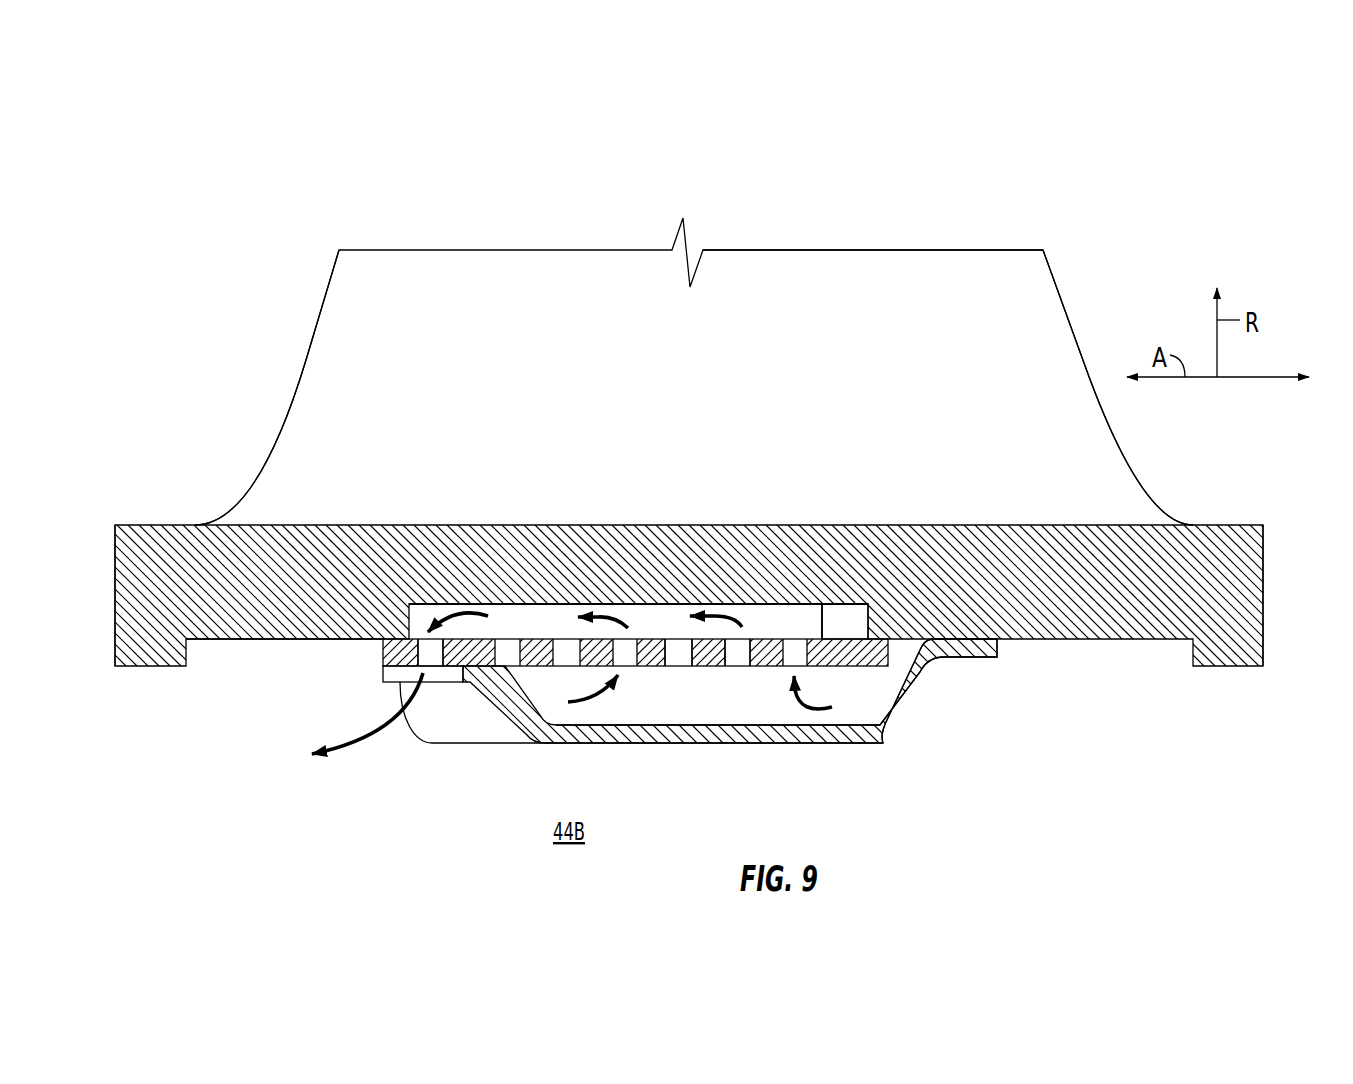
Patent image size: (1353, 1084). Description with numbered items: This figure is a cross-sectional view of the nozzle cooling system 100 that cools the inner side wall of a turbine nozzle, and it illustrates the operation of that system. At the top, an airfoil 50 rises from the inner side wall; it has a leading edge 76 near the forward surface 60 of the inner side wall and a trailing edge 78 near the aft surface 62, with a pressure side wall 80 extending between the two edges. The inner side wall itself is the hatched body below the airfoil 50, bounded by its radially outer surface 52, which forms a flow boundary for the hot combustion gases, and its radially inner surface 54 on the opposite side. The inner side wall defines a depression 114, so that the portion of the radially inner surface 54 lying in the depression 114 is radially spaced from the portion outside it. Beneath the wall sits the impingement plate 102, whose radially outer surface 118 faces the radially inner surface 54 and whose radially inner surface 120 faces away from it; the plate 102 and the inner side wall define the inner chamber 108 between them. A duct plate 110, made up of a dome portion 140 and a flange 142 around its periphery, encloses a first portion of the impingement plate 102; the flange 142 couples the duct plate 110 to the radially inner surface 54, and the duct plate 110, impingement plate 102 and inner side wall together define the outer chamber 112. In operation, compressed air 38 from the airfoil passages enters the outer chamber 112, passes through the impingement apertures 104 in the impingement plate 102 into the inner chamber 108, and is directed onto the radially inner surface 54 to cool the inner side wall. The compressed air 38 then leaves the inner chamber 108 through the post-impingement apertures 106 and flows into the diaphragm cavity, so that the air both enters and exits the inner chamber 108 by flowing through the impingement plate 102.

The nozzle cooling system 100 is at (266, 203).
The airfoil 50 is at (515, 217).
The pressure side wall 80 is at (787, 297).
The leading edge 76 is at (306, 357).
The trailing edge 78 is at (1060, 302).
The radially outer surface 52 is at (1217, 525).
The forward surface 60 is at (115, 582).
The aft surface 62 is at (1263, 622).
The radially inner surface 54 is at (215, 640).
The radially outer surface 118 is at (825, 635).
The depression 114 is at (845, 626).
The inner chamber 108 is at (541, 628).
The radially inner surface 120 is at (397, 668).
The impingement apertures 104 is at (735, 674).
The impingement plate 102 is at (842, 674).
The dome portion 140 is at (740, 745).
The outer chamber 112 is at (893, 738).
The flange 142 is at (985, 660).
The post-impingement apertures 106 is at (428, 677).
The duct plate 110 is at (513, 772).
The compressed air 38 is at (486, 620).